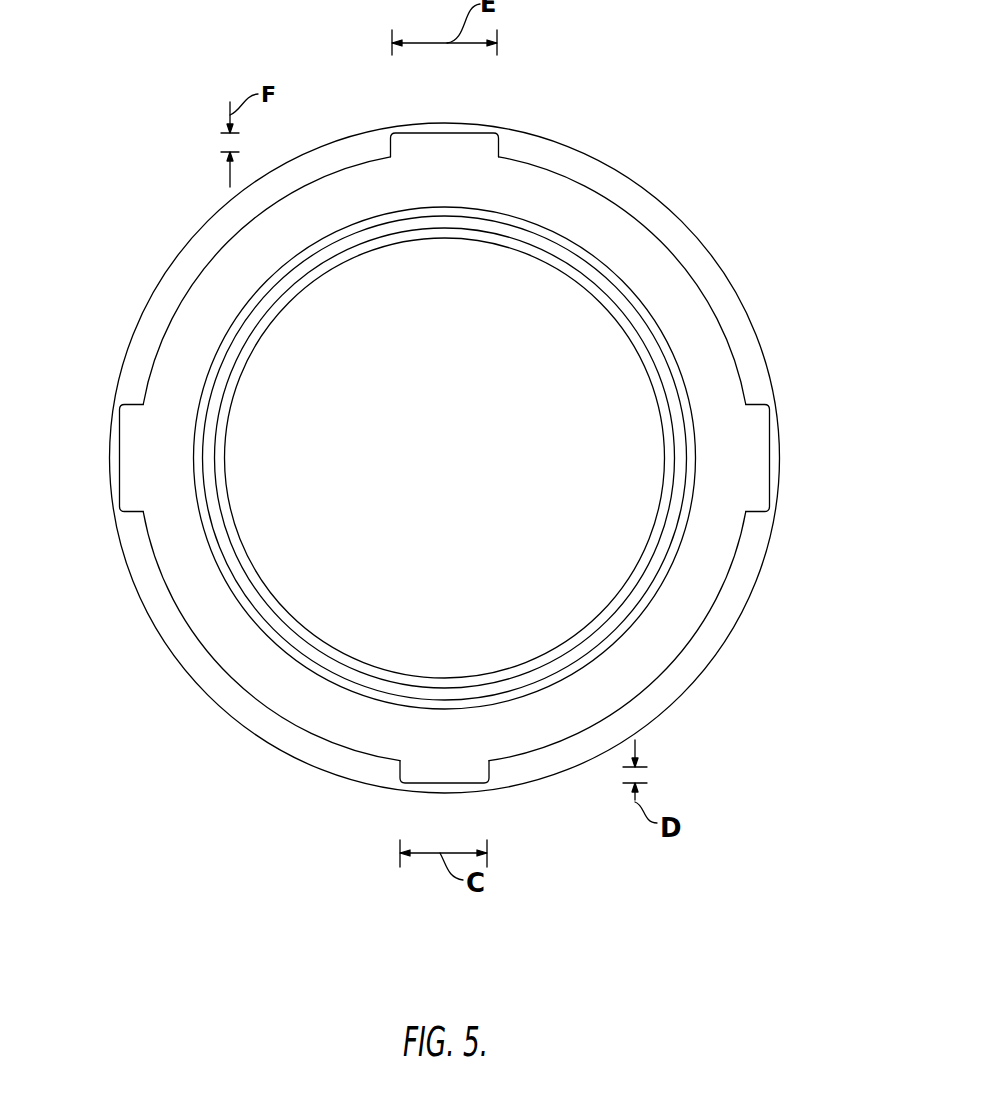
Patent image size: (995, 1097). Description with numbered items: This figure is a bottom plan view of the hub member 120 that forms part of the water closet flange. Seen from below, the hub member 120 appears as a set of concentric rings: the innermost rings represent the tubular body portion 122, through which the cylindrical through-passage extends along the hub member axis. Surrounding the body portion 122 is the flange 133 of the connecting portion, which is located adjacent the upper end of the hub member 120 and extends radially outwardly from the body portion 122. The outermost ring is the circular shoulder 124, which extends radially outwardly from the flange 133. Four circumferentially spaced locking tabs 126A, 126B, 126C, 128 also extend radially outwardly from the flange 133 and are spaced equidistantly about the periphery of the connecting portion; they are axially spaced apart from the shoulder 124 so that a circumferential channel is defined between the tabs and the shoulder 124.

The hub member 120 is at (604, 84).
The tubular body portion 122 is at (655, 345).
The circular shoulder 124 is at (673, 222).
The locking tab 126A is at (125, 475).
The locking tab 126B is at (440, 140).
The locking tab 126C is at (760, 465).
The locking tab 128 is at (425, 777).
The flange 133 is at (713, 325).